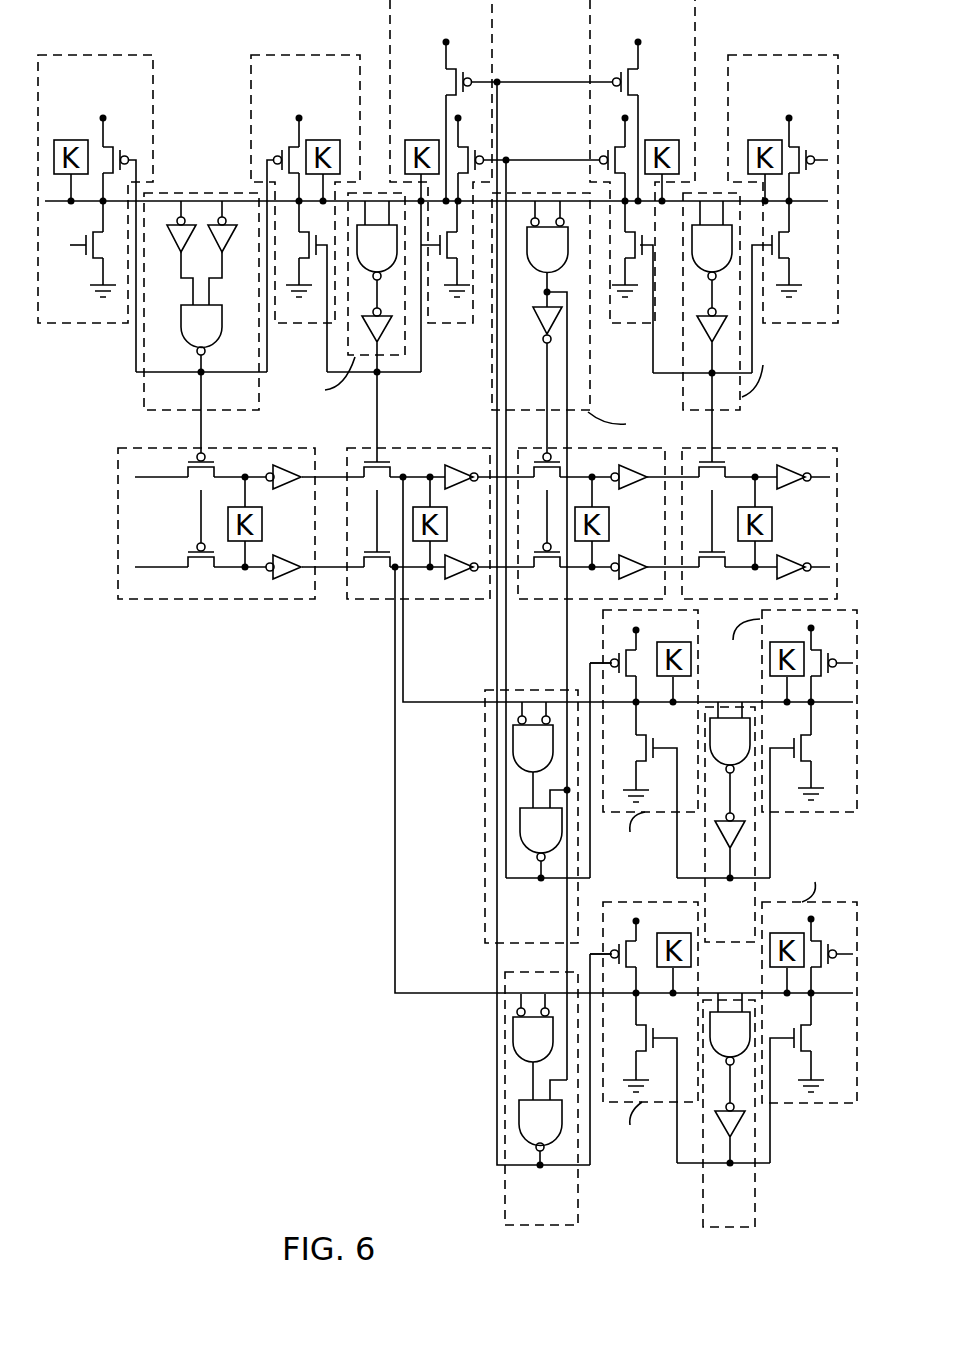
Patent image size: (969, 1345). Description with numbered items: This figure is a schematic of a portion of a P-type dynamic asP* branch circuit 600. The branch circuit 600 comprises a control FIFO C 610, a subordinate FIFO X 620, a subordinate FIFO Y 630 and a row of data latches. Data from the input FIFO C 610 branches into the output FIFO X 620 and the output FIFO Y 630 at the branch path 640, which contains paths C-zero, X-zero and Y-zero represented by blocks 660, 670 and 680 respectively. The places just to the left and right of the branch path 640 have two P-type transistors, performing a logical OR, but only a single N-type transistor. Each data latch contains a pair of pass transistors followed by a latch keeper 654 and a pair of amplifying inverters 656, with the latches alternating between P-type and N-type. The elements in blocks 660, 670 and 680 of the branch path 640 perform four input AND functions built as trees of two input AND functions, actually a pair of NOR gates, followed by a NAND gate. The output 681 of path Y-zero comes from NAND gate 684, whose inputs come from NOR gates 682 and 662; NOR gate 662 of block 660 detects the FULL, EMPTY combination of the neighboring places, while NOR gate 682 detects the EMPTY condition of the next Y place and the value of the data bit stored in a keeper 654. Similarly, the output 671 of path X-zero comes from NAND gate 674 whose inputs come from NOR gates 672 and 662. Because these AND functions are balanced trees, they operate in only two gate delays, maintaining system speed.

The branch circuit 600 is at (145, 1003).
The control FIFO C 610 is at (86, 374).
The subordinate FIFO X 620 is at (336, 802).
The subordinate FIFO Y 630 is at (398, 1097).
The branch path 640 is at (543, 1243).
The latch keeper 654 is at (805, 535).
The amplifying inverters 656 is at (778, 577).
The block for path C0 660 is at (582, 195).
The NOR gate 662 is at (566, 251).
The block for path X0 670 is at (484, 886).
The output of path X0 671 is at (538, 876).
The NOR gate 672 is at (551, 750).
The NAND gate 674 is at (558, 833).
The block for path Y0 680 is at (504, 1203).
The output of path Y0 681 is at (548, 1163).
The NOR gate 682 is at (551, 1042).
The NAND gate 684 is at (558, 1125).